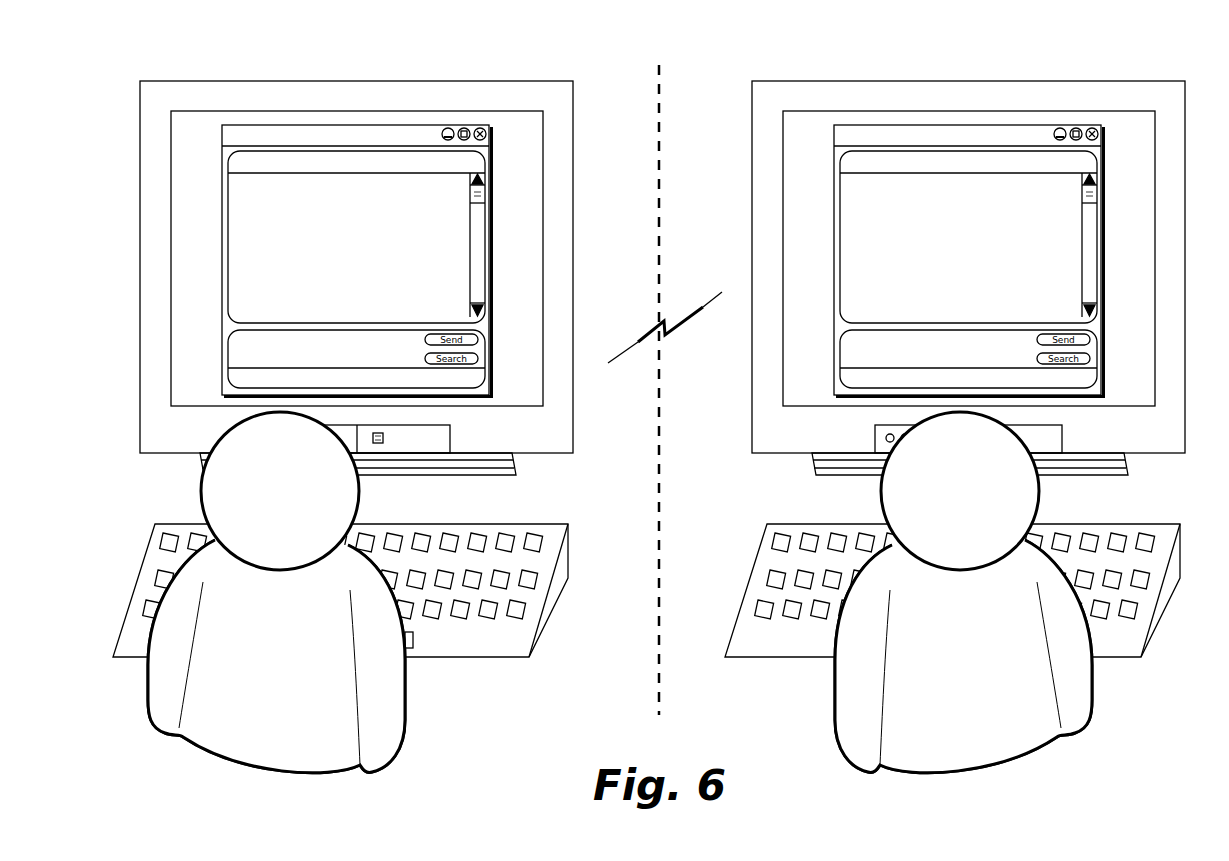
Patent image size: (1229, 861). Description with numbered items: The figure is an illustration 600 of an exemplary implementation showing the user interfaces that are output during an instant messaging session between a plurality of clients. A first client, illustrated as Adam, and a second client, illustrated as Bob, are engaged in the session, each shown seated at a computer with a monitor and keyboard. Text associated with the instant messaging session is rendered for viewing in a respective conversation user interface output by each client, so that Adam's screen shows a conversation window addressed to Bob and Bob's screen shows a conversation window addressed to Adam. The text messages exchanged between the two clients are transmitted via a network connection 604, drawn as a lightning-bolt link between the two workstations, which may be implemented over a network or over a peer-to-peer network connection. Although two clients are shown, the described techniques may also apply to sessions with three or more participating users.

The illustration 600 is at (250, 58).
The network connection 604 is at (638, 344).